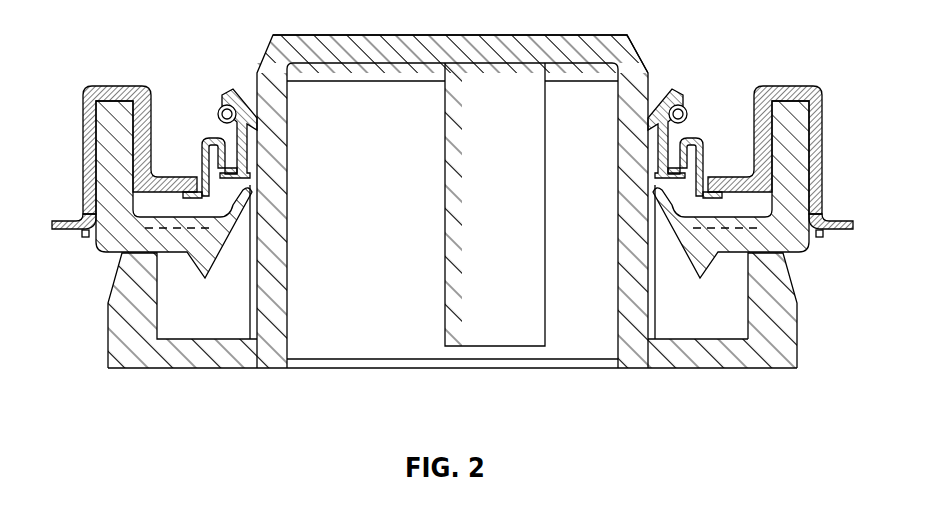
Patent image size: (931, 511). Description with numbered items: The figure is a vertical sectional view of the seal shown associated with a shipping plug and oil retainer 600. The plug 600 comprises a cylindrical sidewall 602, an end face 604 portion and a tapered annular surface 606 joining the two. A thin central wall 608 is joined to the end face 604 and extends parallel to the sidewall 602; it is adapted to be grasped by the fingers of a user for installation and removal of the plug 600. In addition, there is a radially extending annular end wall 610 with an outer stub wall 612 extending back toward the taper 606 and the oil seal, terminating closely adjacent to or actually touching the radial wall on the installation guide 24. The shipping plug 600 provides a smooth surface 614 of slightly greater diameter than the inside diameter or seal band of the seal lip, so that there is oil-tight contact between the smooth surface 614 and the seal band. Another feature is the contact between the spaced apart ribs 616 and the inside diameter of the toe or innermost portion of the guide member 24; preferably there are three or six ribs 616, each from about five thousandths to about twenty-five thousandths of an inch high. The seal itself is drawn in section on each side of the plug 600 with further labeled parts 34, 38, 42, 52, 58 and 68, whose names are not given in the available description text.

The shipping plug and oil retainer 600 is at (487, 218).
The cylindrical sidewall 602 is at (278, 220).
The end face 604 is at (402, 58).
The tapered annular surface 606 is at (270, 43).
The thin central wall 608 is at (453, 273).
The radially extending annular end wall 610 is at (680, 358).
The outer stub wall 612 is at (787, 327).
The smooth surface 614 is at (257, 83).
The ribs 616 is at (253, 323).
The installation guide 24 is at (202, 167).
The seal body 34 is at (820, 163).
The flange 38 is at (848, 223).
The case 42 is at (787, 87).
The garter spring 52 is at (684, 107).
The retainer arm 58 is at (662, 110).
The secondary lip 68 is at (700, 143).